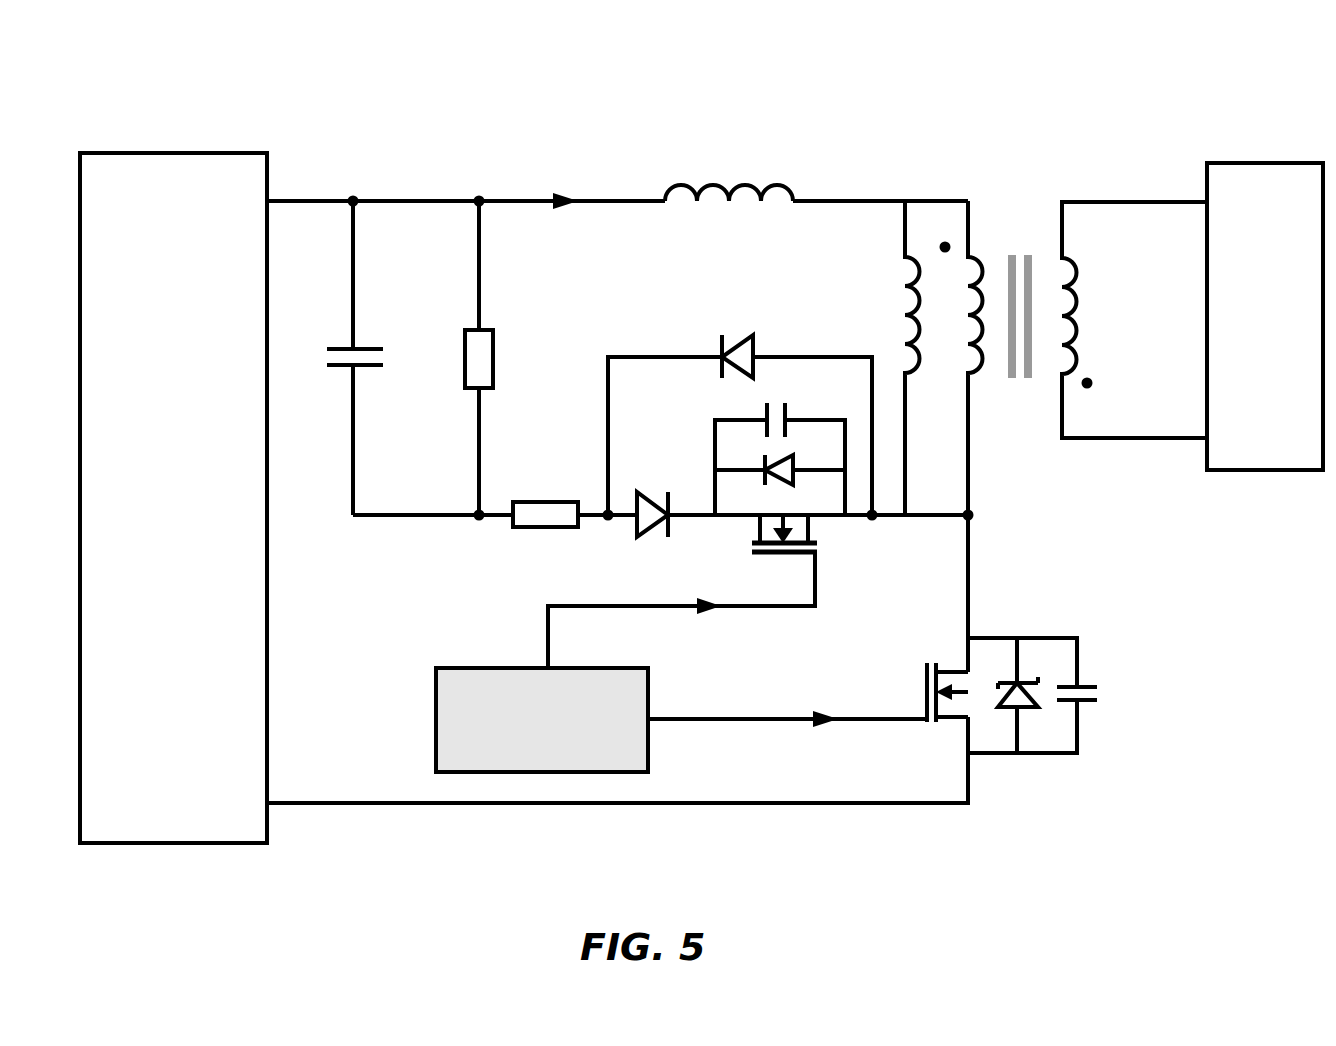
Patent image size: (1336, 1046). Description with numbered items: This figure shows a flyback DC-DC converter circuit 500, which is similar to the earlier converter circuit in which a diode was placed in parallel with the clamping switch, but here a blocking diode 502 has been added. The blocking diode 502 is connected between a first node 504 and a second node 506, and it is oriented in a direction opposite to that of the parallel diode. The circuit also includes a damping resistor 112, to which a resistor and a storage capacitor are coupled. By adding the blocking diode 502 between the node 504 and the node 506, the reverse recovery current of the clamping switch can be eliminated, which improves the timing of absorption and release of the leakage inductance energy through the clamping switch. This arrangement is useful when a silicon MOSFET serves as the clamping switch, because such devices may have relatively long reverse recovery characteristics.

The flyback DC-DC converter circuit 500 is at (210, 68).
The damping resistor 112 is at (558, 500).
The blocking diode 502 is at (640, 492).
The node 504 is at (608, 402).
The node 506 is at (685, 515).